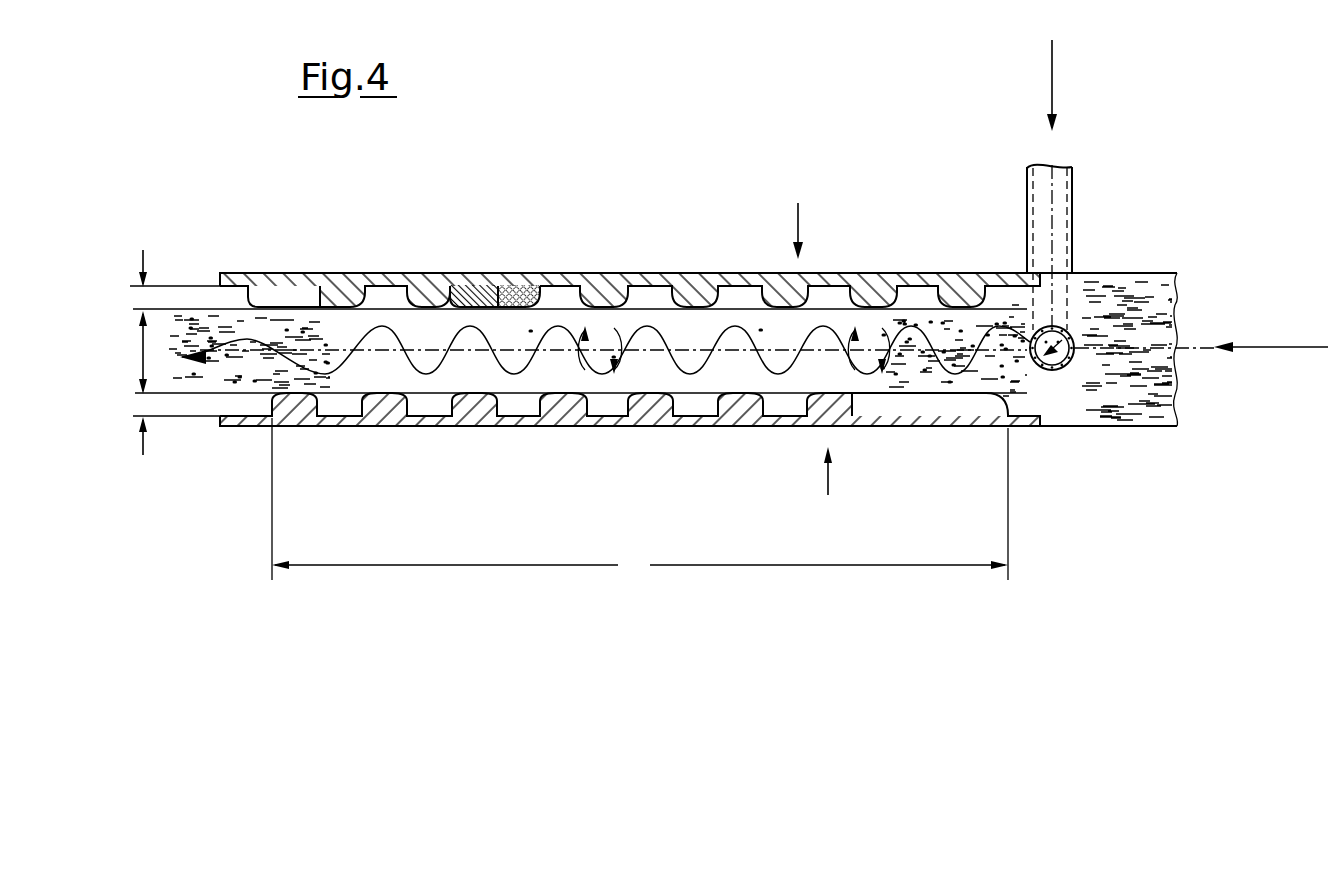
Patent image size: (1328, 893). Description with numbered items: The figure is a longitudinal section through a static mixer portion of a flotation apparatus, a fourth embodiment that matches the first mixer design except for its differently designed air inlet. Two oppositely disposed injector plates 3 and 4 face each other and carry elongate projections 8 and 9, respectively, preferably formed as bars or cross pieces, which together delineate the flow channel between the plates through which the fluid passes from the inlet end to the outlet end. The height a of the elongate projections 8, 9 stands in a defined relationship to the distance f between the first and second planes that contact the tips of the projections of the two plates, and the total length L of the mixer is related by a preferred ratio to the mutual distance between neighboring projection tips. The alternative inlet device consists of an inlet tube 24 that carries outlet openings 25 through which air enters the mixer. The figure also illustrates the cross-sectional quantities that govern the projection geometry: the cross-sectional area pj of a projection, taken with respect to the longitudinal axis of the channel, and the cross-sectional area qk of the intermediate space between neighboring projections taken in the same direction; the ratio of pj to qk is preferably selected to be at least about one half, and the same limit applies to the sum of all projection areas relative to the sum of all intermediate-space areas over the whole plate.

The elongate projections 8 is at (698, 243).
The elongate projections 9 is at (743, 417).
The injector plate 3 is at (808, 218).
The injector plate 4 is at (839, 475).
The inlet tube 24 is at (1060, 193).
The outlet openings 25 is at (1058, 370).
The cross-sectional area of intermediate space qk is at (473, 287).
The cross-sectional area of projection pj is at (531, 287).
The height of the elongate projections a is at (143, 298).
The distance between planes contacting the projection tips f is at (140, 353).
The total length of the mixer L is at (640, 500).